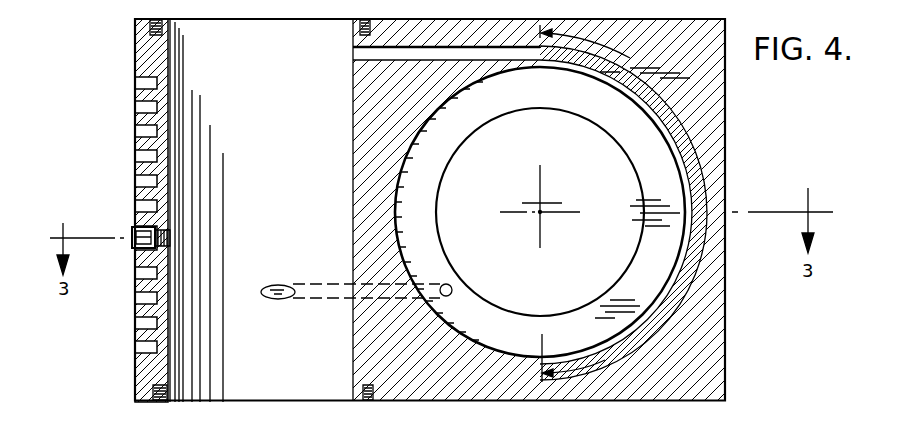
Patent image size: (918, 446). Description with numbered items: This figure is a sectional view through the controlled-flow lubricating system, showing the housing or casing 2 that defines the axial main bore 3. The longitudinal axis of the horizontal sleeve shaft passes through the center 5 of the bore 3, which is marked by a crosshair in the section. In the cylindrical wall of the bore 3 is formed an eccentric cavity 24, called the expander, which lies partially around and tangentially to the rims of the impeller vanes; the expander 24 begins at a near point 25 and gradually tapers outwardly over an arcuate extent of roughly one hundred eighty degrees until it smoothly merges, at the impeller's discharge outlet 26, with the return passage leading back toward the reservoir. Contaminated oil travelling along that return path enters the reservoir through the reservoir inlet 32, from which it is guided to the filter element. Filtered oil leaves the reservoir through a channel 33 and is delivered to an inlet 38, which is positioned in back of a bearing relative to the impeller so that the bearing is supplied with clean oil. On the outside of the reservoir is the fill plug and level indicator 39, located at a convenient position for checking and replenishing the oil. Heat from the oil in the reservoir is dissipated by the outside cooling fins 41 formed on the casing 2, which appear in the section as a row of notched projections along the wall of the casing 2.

The housing or casing 2 is at (732, 345).
The axial main bore 3 is at (508, 350).
The center of bore 5 is at (541, 213).
The eccentric cavity (expander) 24 is at (691, 212).
The near point 25 is at (546, 364).
The impeller discharge outlet 26 is at (538, 55).
The reservoir inlet 32 is at (353, 52).
The channel 33 is at (281, 300).
The inlet 38 is at (450, 286).
The fill plug and level indicator 39 is at (133, 246).
The cooling fins 41 is at (137, 155).